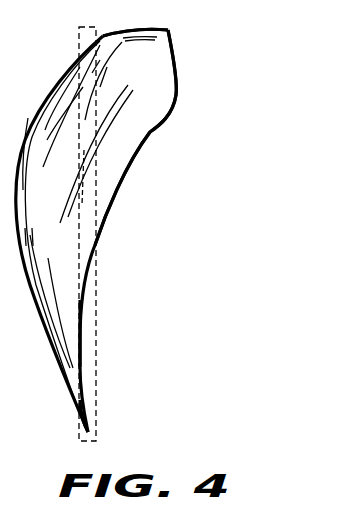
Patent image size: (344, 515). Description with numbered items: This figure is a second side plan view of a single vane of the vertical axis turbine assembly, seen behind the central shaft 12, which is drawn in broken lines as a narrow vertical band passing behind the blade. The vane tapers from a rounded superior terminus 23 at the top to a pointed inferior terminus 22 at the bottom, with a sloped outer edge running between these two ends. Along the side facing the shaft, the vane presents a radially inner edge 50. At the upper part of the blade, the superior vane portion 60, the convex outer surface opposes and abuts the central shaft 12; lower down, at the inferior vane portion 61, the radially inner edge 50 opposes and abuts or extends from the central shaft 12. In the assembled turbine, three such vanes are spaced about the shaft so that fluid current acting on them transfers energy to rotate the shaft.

The central shaft 12 is at (99, 355).
The pointed inferior terminus 22 is at (92, 433).
The rounded superior terminus 23 is at (140, 28).
The radially inner edge 50 is at (95, 244).
The superior vane portion 60 is at (188, 95).
The inferior vane portion 61 is at (124, 340).